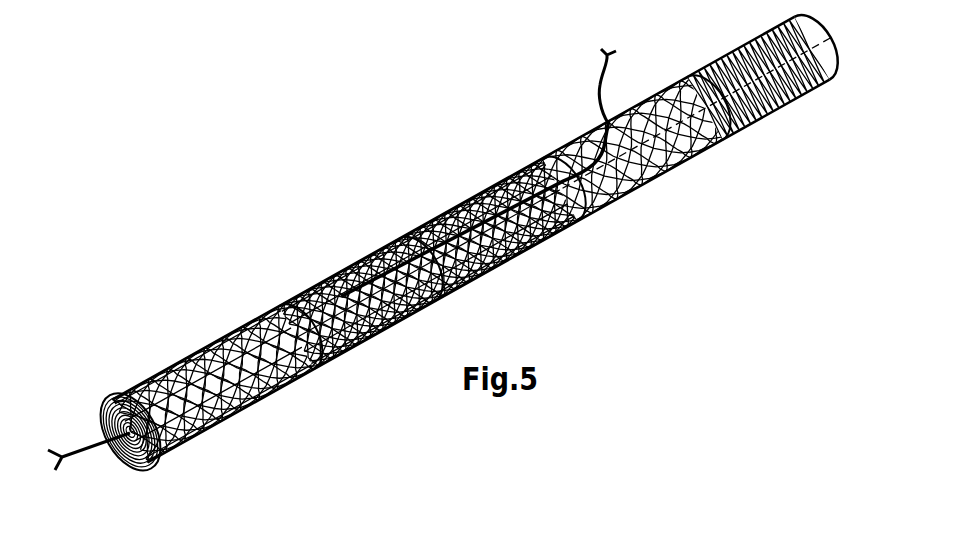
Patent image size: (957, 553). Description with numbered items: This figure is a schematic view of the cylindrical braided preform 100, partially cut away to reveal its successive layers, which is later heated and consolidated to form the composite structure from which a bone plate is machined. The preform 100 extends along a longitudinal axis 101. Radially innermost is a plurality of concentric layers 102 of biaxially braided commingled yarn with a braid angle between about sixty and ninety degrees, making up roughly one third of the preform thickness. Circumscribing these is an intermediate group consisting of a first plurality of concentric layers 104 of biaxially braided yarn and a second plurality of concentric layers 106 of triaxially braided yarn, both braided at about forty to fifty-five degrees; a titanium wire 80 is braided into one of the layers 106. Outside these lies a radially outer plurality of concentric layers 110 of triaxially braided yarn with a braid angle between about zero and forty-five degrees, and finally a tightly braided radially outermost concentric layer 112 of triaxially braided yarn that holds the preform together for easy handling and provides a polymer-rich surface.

The titanium wire 80 is at (598, 86).
The cylindrical braided preform 100 is at (208, 268).
The longitudinal axis 101 is at (73, 468).
The radially inner plurality of concentric layers 102 is at (767, 107).
The first plurality of concentric layers 104 is at (655, 160).
The second plurality of concentric layers 106 is at (478, 192).
The radially outer plurality of concentric layers 110 is at (335, 272).
The radially outermost concentric layer 112 is at (259, 412).